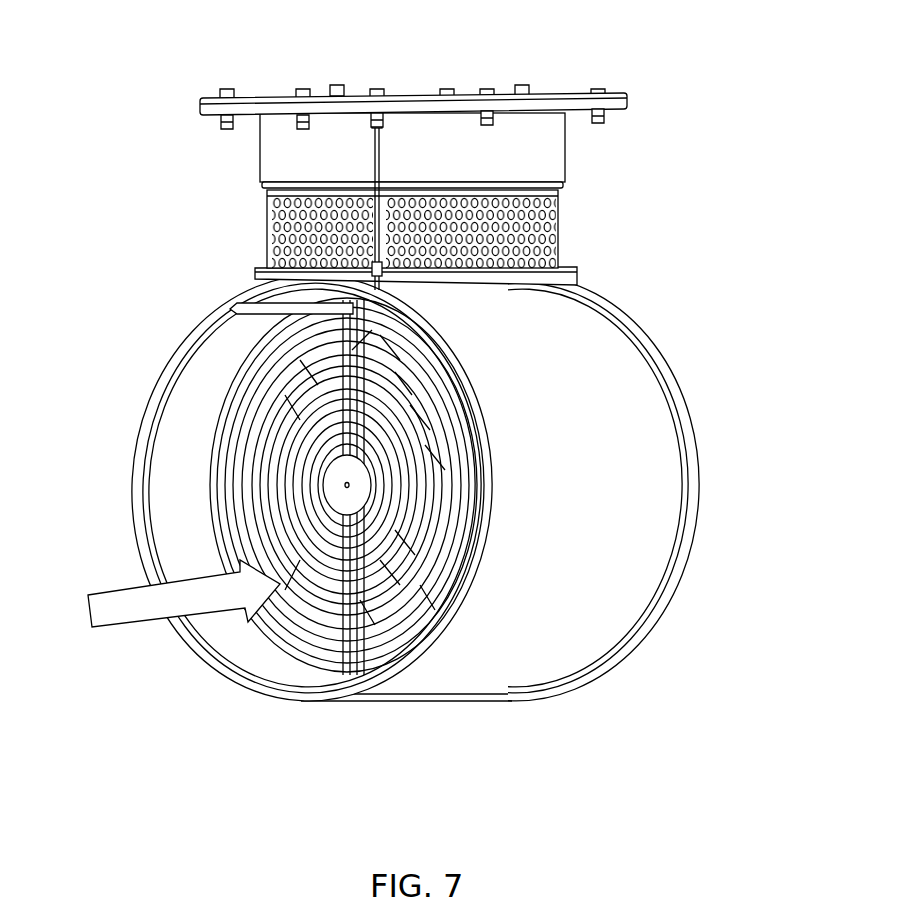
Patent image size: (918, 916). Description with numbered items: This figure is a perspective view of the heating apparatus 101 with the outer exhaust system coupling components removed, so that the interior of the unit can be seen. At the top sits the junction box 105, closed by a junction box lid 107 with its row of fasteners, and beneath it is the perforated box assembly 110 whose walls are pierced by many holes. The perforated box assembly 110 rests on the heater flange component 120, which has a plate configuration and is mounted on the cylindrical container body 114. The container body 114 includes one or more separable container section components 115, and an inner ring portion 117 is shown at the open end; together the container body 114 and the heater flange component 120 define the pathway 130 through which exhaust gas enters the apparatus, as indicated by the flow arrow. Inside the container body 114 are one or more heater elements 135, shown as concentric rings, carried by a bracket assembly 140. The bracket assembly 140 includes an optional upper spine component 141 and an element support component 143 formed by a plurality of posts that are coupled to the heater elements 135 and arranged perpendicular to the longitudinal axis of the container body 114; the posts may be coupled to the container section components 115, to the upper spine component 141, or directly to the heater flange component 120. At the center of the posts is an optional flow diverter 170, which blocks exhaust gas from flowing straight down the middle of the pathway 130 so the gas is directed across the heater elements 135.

The heating apparatus 101 is at (110, 190).
The junction box 105 is at (548, 163).
The junction box lid 107 is at (408, 96).
The perforated box assembly 110 is at (557, 232).
The container body 114 is at (640, 655).
The container section component 115 is at (345, 682).
The guard ring 117 is at (412, 660).
The heater flange component 120 is at (578, 277).
The pathway 130 is at (135, 590).
The heater element 135 is at (217, 423).
The bracket assembly 140 is at (355, 528).
The upper spine component 141 is at (330, 293).
The element support component 143 is at (430, 566).
The flow diverter 170 is at (333, 473).